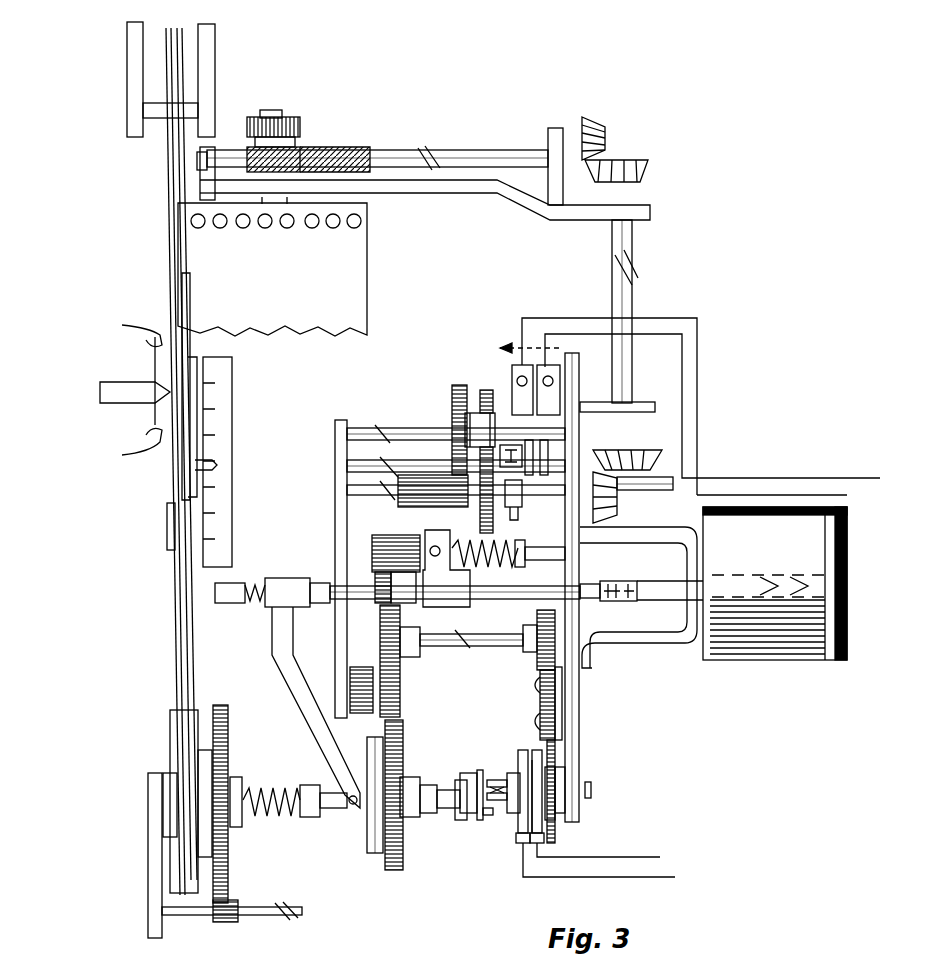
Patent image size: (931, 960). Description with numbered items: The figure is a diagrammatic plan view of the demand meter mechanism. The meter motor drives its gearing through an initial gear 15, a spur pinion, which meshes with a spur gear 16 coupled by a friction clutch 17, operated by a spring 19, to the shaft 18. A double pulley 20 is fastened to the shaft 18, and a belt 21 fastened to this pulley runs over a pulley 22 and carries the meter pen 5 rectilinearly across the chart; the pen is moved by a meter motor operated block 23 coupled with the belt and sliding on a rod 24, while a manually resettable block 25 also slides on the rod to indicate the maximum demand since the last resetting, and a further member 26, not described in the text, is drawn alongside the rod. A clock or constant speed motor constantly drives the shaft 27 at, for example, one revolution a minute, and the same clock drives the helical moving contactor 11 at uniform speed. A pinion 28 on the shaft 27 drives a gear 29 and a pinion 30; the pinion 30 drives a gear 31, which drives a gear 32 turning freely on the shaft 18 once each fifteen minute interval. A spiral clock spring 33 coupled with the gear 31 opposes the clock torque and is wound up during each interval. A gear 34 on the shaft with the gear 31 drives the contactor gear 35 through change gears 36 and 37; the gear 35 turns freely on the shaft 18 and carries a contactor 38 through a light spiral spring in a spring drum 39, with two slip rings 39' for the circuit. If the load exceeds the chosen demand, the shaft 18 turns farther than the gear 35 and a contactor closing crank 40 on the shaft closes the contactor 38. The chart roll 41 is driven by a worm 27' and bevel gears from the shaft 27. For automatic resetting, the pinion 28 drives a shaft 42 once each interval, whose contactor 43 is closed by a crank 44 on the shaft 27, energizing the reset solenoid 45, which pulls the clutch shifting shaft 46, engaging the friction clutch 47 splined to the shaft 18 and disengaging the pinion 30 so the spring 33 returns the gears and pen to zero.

The meter pen 5 is at (100, 392).
The moving contactor 11 is at (519, 347).
The initial gear 15 is at (228, 922).
The spur gear 16 is at (225, 870).
The friction clutch 17 is at (233, 820).
The shaft 18 is at (292, 813).
The spring 19 is at (254, 813).
The double pulley 20 is at (180, 893).
The belt 21 is at (178, 690).
The pulley 22 is at (178, 30).
The meter motor operated block 23 is at (156, 327).
The rod 24 is at (190, 298).
The manually resettable block 25 is at (167, 522).
The scale plate 26 is at (230, 433).
The shaft 27 is at (704, 425).
The worm 27' is at (372, 140).
The pinion 28 is at (486, 516).
The gear 29 is at (410, 509).
The pinion 30 is at (380, 536).
The gear 31 is at (393, 680).
The gear 32 is at (400, 750).
The spiral clock spring 33 is at (362, 633).
The gear 34 is at (537, 658).
The contactor gear 35 is at (555, 750).
The change gear 36 is at (557, 685).
The change gear 37 is at (557, 717).
The contactor 38 is at (478, 773).
The spring drum 39 is at (579, 790).
The slip rings 39' is at (580, 808).
The contactor closing crank 40 is at (492, 815).
The chart roll 41 is at (367, 248).
The shaft 42 is at (417, 460).
The contactor 43 is at (507, 450).
The crank 44 is at (516, 507).
The reset solenoid 45 is at (793, 655).
The clutch shifting shaft 46 is at (660, 600).
The friction clutch 47 is at (370, 850).